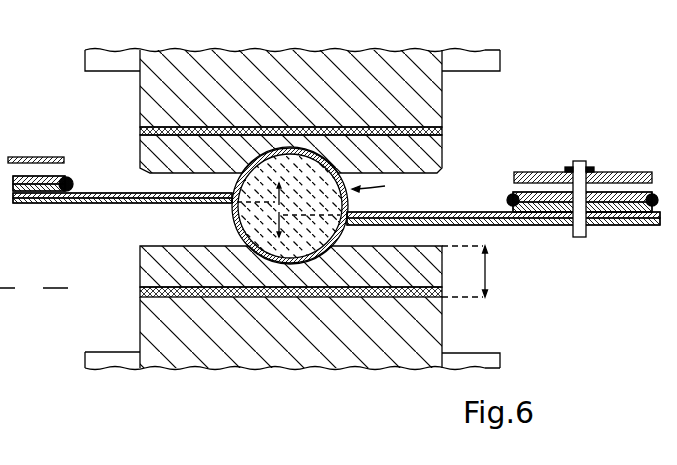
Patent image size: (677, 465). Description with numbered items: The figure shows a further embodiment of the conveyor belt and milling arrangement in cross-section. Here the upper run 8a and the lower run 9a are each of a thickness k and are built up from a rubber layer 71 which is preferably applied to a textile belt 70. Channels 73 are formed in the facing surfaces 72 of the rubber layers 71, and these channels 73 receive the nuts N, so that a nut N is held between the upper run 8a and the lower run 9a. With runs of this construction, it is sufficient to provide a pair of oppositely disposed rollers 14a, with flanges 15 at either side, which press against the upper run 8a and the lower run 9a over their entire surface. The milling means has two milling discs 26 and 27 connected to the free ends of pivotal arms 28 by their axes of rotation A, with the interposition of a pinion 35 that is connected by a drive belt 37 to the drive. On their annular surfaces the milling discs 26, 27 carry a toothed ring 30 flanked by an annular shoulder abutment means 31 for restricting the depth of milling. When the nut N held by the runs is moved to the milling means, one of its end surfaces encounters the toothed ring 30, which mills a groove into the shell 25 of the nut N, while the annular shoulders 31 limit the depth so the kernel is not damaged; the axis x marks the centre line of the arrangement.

The rollers 14a is at (432, 97).
The mould flange 15 is at (93, 57).
The textile belt 70 is at (139, 131).
The rubber layer 71 is at (148, 153).
The facing surfaces 72 is at (149, 172).
The upper run 8a is at (297, 152).
The lower run 9a is at (430, 258).
The channels 73 is at (283, 147).
The shell 25 is at (263, 257).
The milling disc 26 is at (195, 206).
The milling disc 27 is at (428, 232).
The pivotal arms 28 is at (640, 166).
The toothed ring 30 is at (232, 205).
The annular shoulder abutment means 31 is at (232, 191).
The pinion 35 is at (533, 190).
The drive belt 37 is at (637, 212).
The nuts N is at (375, 190).
The axes of rotation A is at (578, 165).
The thickness k is at (466, 271).
The axis x is at (34, 289).